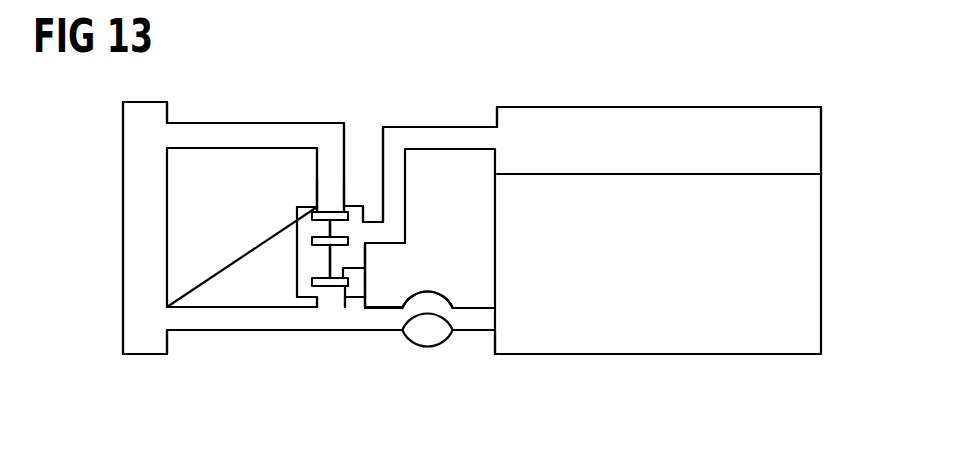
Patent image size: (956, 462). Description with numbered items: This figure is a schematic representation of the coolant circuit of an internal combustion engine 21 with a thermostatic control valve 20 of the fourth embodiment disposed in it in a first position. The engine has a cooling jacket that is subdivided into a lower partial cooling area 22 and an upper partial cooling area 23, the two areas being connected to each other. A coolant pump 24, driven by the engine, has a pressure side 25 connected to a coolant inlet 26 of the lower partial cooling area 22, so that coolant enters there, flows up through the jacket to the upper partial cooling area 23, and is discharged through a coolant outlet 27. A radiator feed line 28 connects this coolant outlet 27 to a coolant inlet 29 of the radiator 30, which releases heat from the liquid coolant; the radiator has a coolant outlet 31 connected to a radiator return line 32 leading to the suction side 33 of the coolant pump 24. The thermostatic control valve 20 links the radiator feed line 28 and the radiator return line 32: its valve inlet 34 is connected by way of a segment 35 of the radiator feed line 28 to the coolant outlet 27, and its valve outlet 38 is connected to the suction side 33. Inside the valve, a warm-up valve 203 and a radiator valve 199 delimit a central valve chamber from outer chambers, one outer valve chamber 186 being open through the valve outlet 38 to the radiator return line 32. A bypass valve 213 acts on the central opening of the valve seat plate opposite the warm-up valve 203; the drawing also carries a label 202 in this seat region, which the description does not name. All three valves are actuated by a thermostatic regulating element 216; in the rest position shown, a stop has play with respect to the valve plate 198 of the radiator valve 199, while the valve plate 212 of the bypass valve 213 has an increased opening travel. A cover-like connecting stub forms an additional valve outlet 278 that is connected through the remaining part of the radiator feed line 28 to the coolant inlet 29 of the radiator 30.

The thermostatic control valve 20 is at (276, 265).
The internal combustion engine 21 is at (612, 368).
The lower partial cooling area 22 is at (715, 330).
The upper partial cooling area 23 is at (670, 105).
The coolant pump 24 is at (423, 327).
The pressure side 25 is at (477, 332).
The coolant inlet 26 is at (493, 320).
The coolant outlet 27 is at (495, 137).
The radiator feed line 28 is at (413, 104).
The coolant inlet of the radiator 29 is at (167, 138).
The radiator 30 is at (123, 205).
The coolant outlet of the radiator 31 is at (167, 317).
The radiator return line 32 is at (224, 345).
The suction side 33 is at (373, 303).
The valve inlet 34 is at (345, 231).
The segment of the radiator feed line 35 is at (453, 138).
The valve outlet 38 is at (328, 300).
The outer valve chamber 186 is at (359, 268).
The valve plate 198 is at (324, 190).
The radiator valve 199 is at (301, 212).
The seat shoulder 202 is at (340, 276).
The warm-up valve 203 is at (301, 284).
The valve plate 212 is at (349, 241).
The bypass valve 213 is at (301, 242).
The thermostatic regulating element 216 is at (355, 205).
The additional valve outlet 278 is at (323, 167).